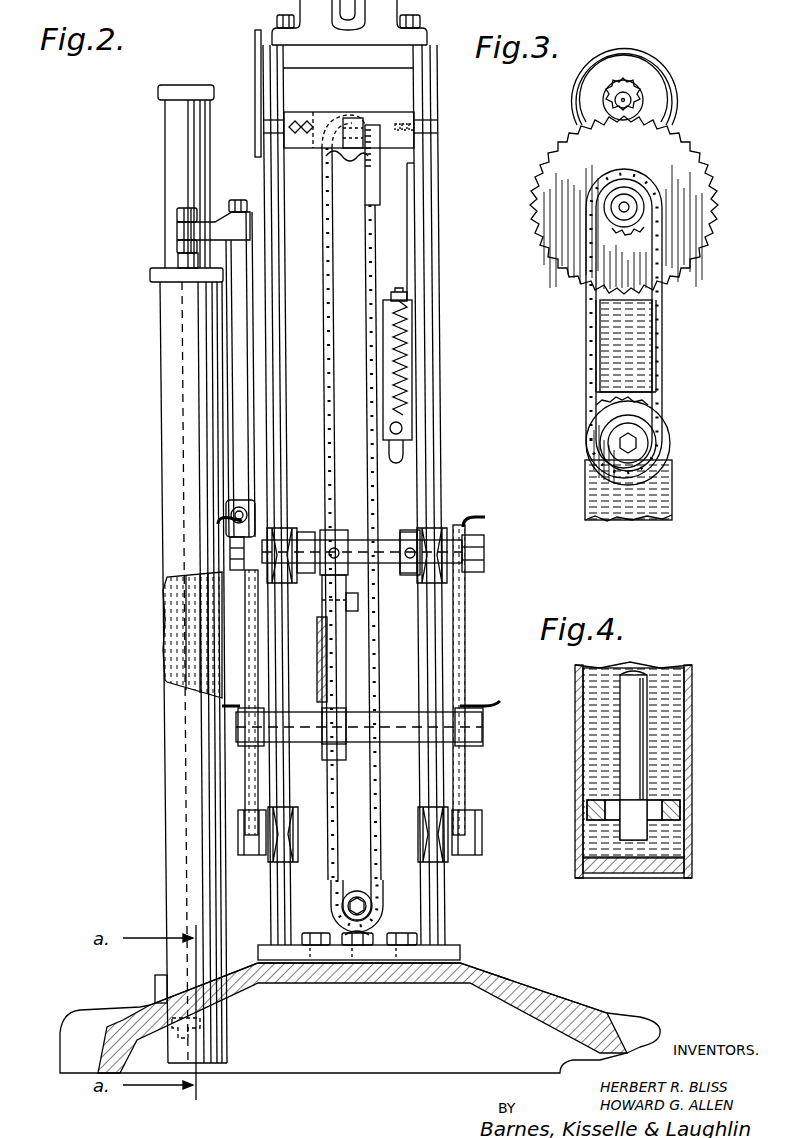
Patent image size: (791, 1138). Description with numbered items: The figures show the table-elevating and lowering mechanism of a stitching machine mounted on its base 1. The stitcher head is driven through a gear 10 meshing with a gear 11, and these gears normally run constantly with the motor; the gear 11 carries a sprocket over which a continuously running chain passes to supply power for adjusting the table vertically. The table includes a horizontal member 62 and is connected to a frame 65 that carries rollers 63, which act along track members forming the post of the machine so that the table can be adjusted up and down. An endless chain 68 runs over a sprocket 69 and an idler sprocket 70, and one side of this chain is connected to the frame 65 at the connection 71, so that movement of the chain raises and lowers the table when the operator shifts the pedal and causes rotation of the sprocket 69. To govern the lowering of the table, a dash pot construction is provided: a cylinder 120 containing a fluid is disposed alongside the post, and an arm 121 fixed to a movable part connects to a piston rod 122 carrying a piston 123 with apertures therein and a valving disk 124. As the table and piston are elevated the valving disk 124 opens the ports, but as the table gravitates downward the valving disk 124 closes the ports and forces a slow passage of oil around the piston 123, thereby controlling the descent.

In FIG. 2, the base 1 is at (520, 990).
In FIG. 3, the gear 10 is at (638, 94).
In FIG. 3, the gear 11 is at (690, 168).
In FIG. 2, the horizontal member 62 is at (475, 520).
In FIG. 2, the rollers 63 is at (465, 578).
In FIG. 2, the frame 65 is at (465, 645).
In FIG. 2, the endless chain 68 is at (330, 332).
In FIG. 2, the sprocket 69 is at (330, 170).
In FIG. 2, the idler sprocket 70 is at (375, 890).
In FIG. 2, the chain connection 71 is at (340, 655).
In FIG. 2, the cylinder 120 is at (170, 398).
In FIG. 4, the cylinder 120 is at (690, 740).
In FIG. 2, the arm 121 is at (230, 321).
In FIG. 2, the piston rod 122 is at (185, 598).
In FIG. 4, the piston rod 122 is at (633, 715).
In FIG. 4, the piston 123 is at (680, 808).
In FIG. 4, the valving disk 124 is at (675, 830).